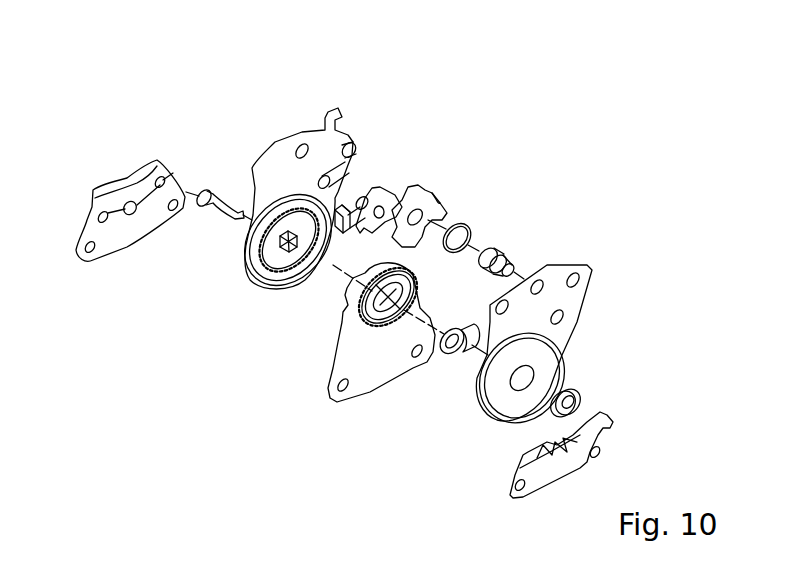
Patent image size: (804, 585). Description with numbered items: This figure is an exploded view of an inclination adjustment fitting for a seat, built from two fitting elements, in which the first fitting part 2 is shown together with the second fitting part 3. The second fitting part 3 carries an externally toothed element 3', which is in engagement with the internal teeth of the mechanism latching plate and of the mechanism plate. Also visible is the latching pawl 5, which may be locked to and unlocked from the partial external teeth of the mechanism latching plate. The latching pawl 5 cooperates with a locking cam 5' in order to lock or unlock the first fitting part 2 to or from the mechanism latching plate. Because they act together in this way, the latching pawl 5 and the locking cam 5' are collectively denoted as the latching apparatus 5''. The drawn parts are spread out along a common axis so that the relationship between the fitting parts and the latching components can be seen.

The first fitting part 2 is at (272, 140).
The second fitting part 3 is at (344, 329).
The externally toothed element 3' is at (354, 312).
The latching pawl 5 is at (375, 154).
The locking cam 5' is at (454, 196).
The latching apparatus 5'' is at (443, 65).